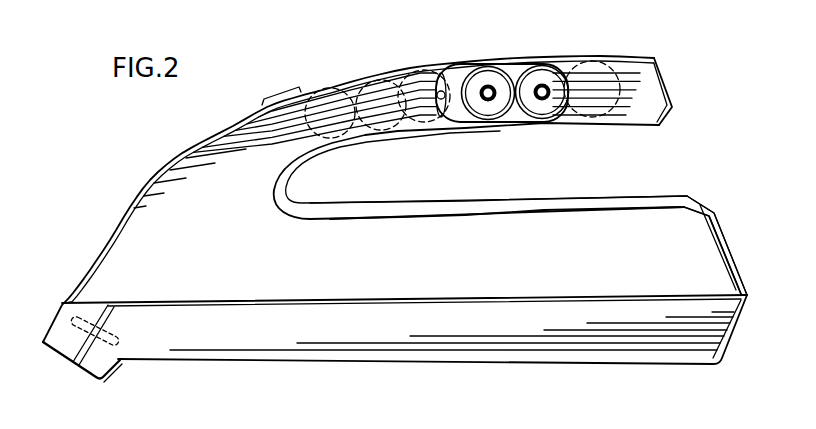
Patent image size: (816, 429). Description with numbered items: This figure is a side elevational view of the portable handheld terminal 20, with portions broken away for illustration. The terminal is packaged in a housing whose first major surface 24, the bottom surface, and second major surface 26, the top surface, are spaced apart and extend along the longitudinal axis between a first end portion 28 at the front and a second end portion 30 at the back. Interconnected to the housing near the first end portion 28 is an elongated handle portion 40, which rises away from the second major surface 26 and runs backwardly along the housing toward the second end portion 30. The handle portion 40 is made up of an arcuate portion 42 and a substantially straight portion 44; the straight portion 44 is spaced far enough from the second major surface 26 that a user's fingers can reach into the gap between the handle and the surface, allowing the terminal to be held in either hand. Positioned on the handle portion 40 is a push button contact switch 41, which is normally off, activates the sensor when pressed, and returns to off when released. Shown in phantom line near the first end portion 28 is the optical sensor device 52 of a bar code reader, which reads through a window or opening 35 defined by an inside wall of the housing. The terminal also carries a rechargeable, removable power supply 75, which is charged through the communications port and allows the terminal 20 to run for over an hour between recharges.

The portable handheld terminal 20 is at (97, 203).
The first major surface 24 is at (597, 365).
The second major surface 26 is at (591, 197).
The first end portion 28 is at (52, 326).
The second end portion 30 is at (727, 243).
The window or opening 35 is at (75, 372).
The handle portion 40 is at (646, 56).
The contact switch 41 is at (278, 89).
The arcuate portion 42 is at (182, 148).
The substantially straight portion 44 is at (569, 58).
The optical sensor device 52 is at (77, 312).
The rechargeable, removable power supply 75 is at (477, 77).